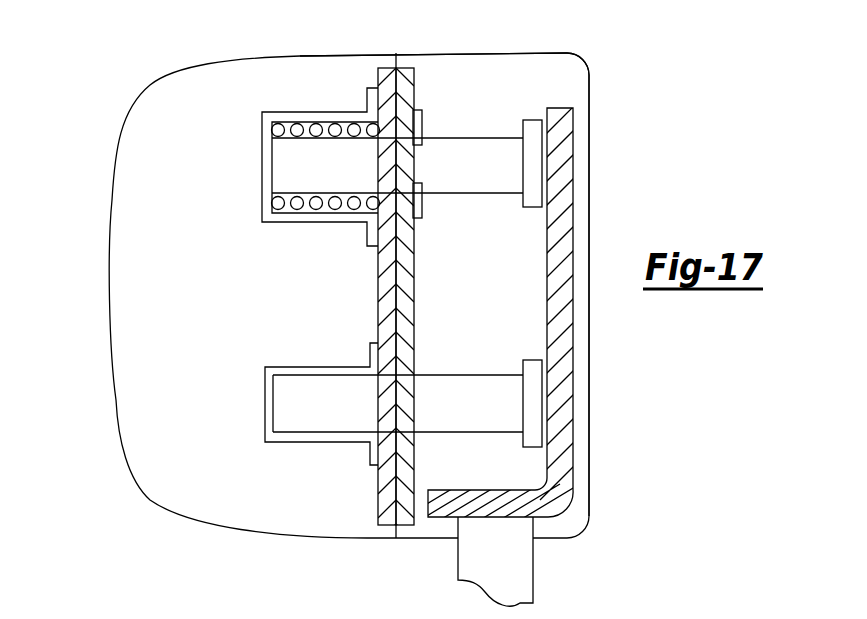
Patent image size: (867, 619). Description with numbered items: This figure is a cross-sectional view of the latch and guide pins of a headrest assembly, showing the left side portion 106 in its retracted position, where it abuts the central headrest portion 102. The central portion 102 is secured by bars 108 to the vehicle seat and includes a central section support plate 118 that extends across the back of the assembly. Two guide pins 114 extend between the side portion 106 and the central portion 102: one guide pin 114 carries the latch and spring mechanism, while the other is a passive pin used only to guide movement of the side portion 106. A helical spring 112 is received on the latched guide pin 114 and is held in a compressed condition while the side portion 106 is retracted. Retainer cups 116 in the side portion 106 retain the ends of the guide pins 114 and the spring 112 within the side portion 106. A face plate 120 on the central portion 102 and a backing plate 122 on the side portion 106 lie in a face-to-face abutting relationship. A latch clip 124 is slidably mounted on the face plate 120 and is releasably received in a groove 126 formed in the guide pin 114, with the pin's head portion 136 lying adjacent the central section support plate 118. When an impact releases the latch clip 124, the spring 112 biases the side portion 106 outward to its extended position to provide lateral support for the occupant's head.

The central headrest portion 102 is at (545, 60).
The left side portion 106 is at (135, 247).
The bars 108 is at (521, 577).
The helical spring 112 is at (313, 209).
The guide pin 114 is at (450, 138).
The retainer cup 116 is at (262, 175).
The central section support plate 118 is at (573, 168).
The face plate 120 is at (414, 262).
The backing plate 122 is at (380, 312).
The latch clip 124 is at (422, 208).
The groove 126 is at (420, 183).
The head portion 136 is at (530, 360).